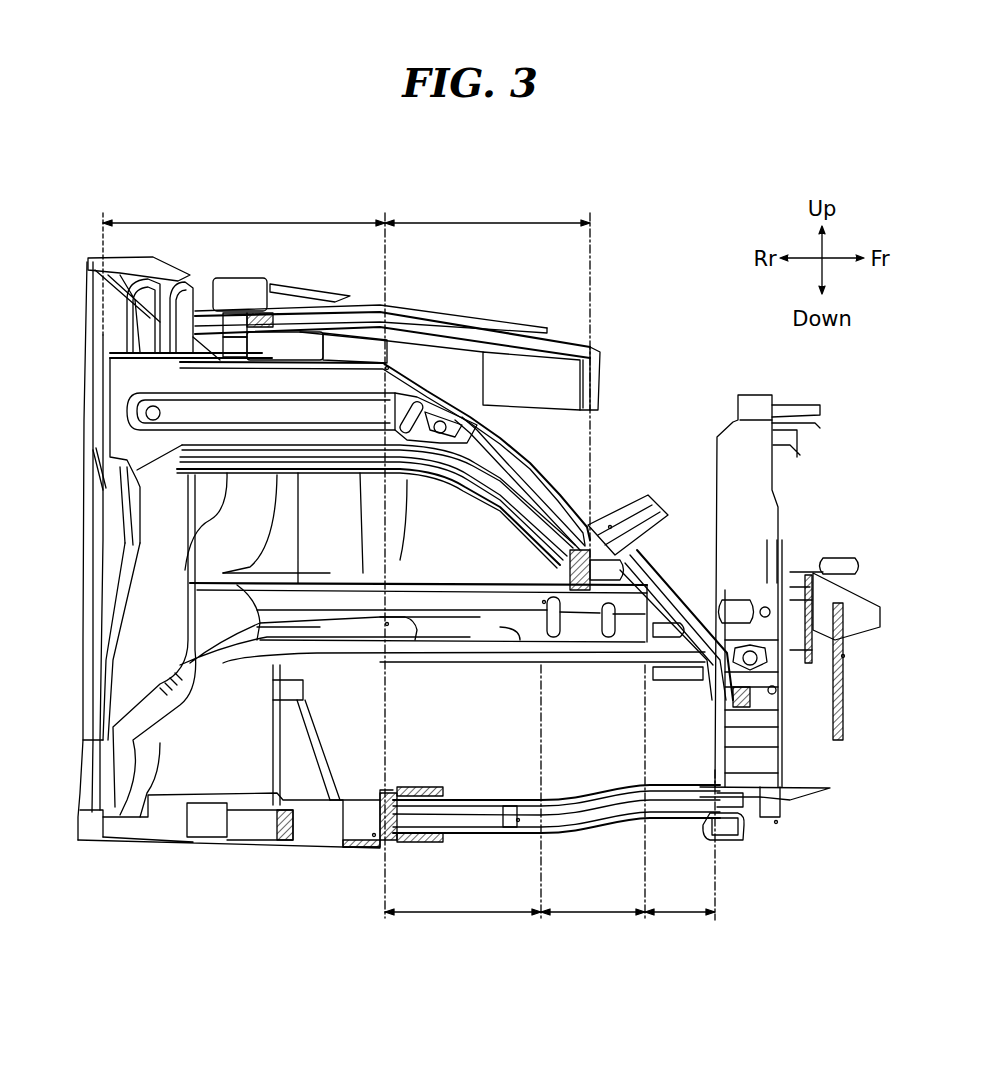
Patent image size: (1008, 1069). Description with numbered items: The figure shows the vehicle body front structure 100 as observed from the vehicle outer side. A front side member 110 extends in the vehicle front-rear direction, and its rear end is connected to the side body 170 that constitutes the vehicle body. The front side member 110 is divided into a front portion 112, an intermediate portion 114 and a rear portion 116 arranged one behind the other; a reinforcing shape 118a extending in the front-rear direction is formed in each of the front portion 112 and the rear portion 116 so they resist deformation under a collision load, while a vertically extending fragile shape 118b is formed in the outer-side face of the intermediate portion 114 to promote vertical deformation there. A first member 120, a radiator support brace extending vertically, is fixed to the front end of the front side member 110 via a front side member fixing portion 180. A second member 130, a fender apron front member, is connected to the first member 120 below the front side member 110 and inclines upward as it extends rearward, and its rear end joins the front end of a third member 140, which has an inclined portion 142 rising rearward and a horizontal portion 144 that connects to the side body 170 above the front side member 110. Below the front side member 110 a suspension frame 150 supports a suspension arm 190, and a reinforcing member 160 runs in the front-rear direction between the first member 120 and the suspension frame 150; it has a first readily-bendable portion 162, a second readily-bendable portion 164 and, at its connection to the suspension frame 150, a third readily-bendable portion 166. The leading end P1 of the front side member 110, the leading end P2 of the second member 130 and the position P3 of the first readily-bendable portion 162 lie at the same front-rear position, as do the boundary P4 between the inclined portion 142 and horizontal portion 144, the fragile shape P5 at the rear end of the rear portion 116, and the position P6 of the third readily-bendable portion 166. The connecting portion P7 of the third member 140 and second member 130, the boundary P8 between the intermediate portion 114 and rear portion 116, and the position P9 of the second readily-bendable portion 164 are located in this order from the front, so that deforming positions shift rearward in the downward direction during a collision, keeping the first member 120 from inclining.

The vehicle body front structure 100 is at (655, 262).
The front side member 110 is at (620, 683).
The front portion 112 is at (680, 900).
The intermediate portion 114 is at (593, 900).
The rear portion 116 is at (463, 900).
The reinforcing shape 118a is at (490, 617).
The fragile shape 118b is at (555, 642).
The first member 120 is at (767, 760).
The second member 130 is at (665, 554).
The third member 140 is at (603, 458).
The inclined portion 142 is at (487, 211).
The horizontal portion 144 is at (244, 211).
The suspension frame 150 is at (360, 793).
The reinforcing member 160 is at (468, 790).
The first readily-bendable portion 162 is at (740, 838).
The second readily-bendable portion 164 is at (512, 800).
The third readily-bendable portion 166 is at (396, 795).
The side body 170 is at (132, 318).
The front side member fixing portion 180 is at (722, 563).
The suspension arm 190 is at (167, 838).
The leading end of the front side member P1 is at (845, 656).
The leading end of the second member P2 is at (778, 690).
The position of the first readily-bendable portion P3 is at (777, 823).
The boundary between the inclined portion and the horizontal portion P4 is at (388, 366).
The fragile shape at the rear end of the rear portion P5 is at (388, 622).
The position of the third readily-bendable portion P6 is at (373, 836).
The connecting portion between the third member and the second member P7 is at (610, 525).
The boundary between the intermediate portion and the rear portion P8 is at (543, 600).
The position of the second readily-bendable portion P9 is at (518, 822).